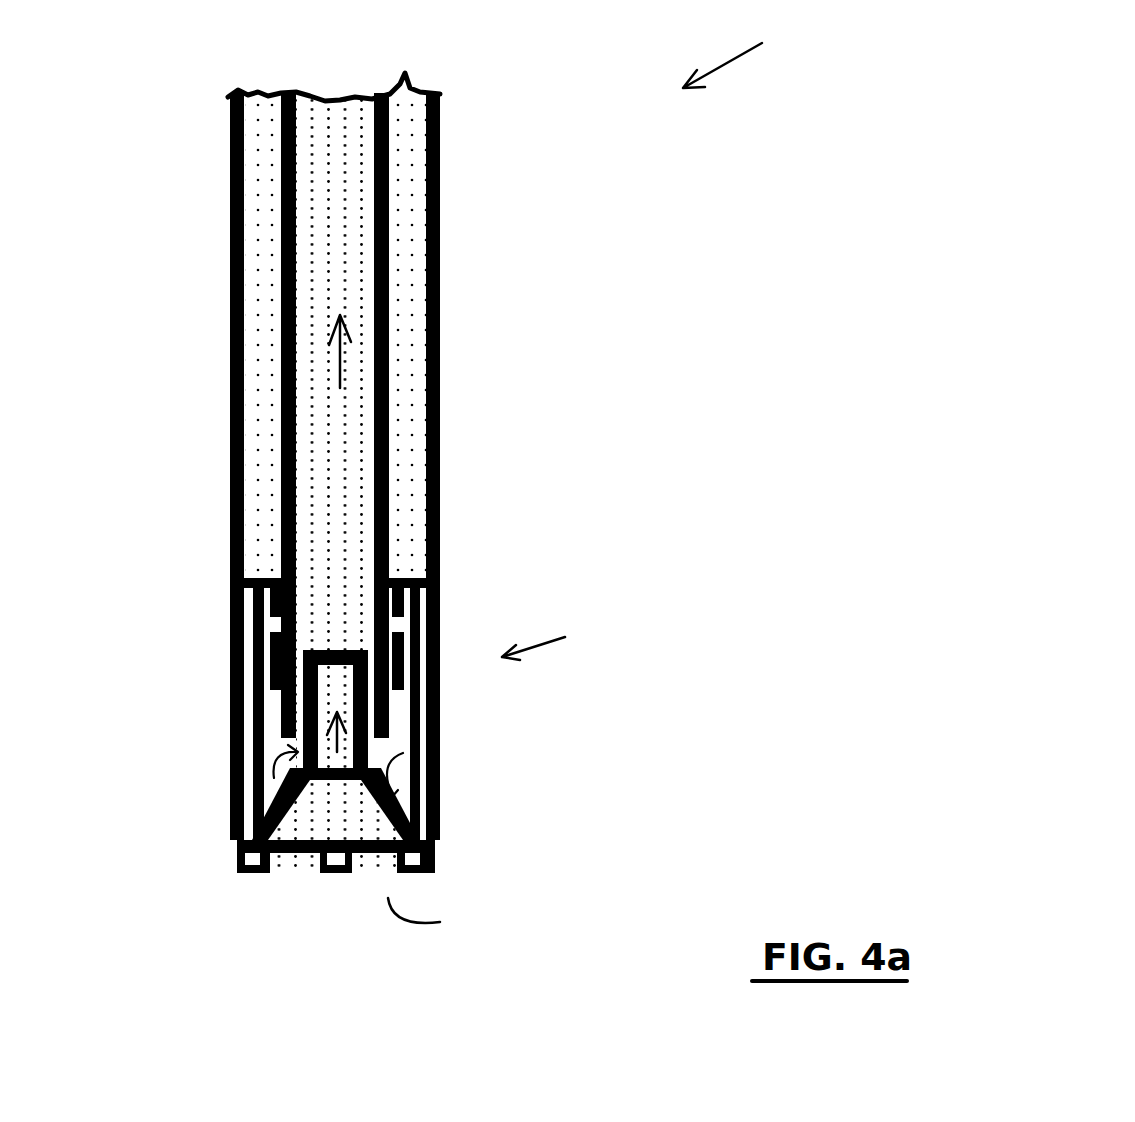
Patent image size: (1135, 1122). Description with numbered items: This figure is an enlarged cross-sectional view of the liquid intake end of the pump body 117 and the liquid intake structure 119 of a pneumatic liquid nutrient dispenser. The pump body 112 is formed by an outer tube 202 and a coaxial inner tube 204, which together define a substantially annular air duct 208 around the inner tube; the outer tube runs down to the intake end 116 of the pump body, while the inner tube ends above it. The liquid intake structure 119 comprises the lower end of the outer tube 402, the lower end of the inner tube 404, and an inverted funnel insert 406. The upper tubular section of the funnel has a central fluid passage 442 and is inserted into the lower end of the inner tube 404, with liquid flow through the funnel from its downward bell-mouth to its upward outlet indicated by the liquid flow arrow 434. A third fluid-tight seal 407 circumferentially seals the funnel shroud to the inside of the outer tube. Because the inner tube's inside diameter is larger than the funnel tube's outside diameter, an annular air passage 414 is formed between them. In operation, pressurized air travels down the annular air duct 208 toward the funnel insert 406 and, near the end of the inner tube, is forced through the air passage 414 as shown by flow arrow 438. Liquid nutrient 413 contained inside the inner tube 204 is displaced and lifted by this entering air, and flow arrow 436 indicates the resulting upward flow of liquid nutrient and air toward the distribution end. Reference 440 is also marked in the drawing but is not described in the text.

The liquid intake end of the pump body 117 is at (751, 54).
The pump body 112 is at (442, 122).
The liquid nutrient 413 is at (362, 207).
The annular air duct 208 is at (407, 242).
The outer tube 202 is at (233, 96).
The inner tube 204 is at (281, 150).
The flow arrow 436 is at (332, 350).
The shoulder 440 is at (407, 578).
The central fluid passage 442 is at (332, 682).
The liquid flow arrow 434 is at (282, 697).
The air passage 414 is at (390, 697).
The liquid intake structure 119 is at (568, 635).
The lower end of the inner tube 404 is at (403, 797).
The third fluid-tight seal 407 is at (245, 730).
The flow arrow 438 is at (275, 790).
The lower end of the outer tube 402 is at (232, 840).
The inverted funnel insert 406 is at (300, 855).
The intake end 116 is at (444, 914).